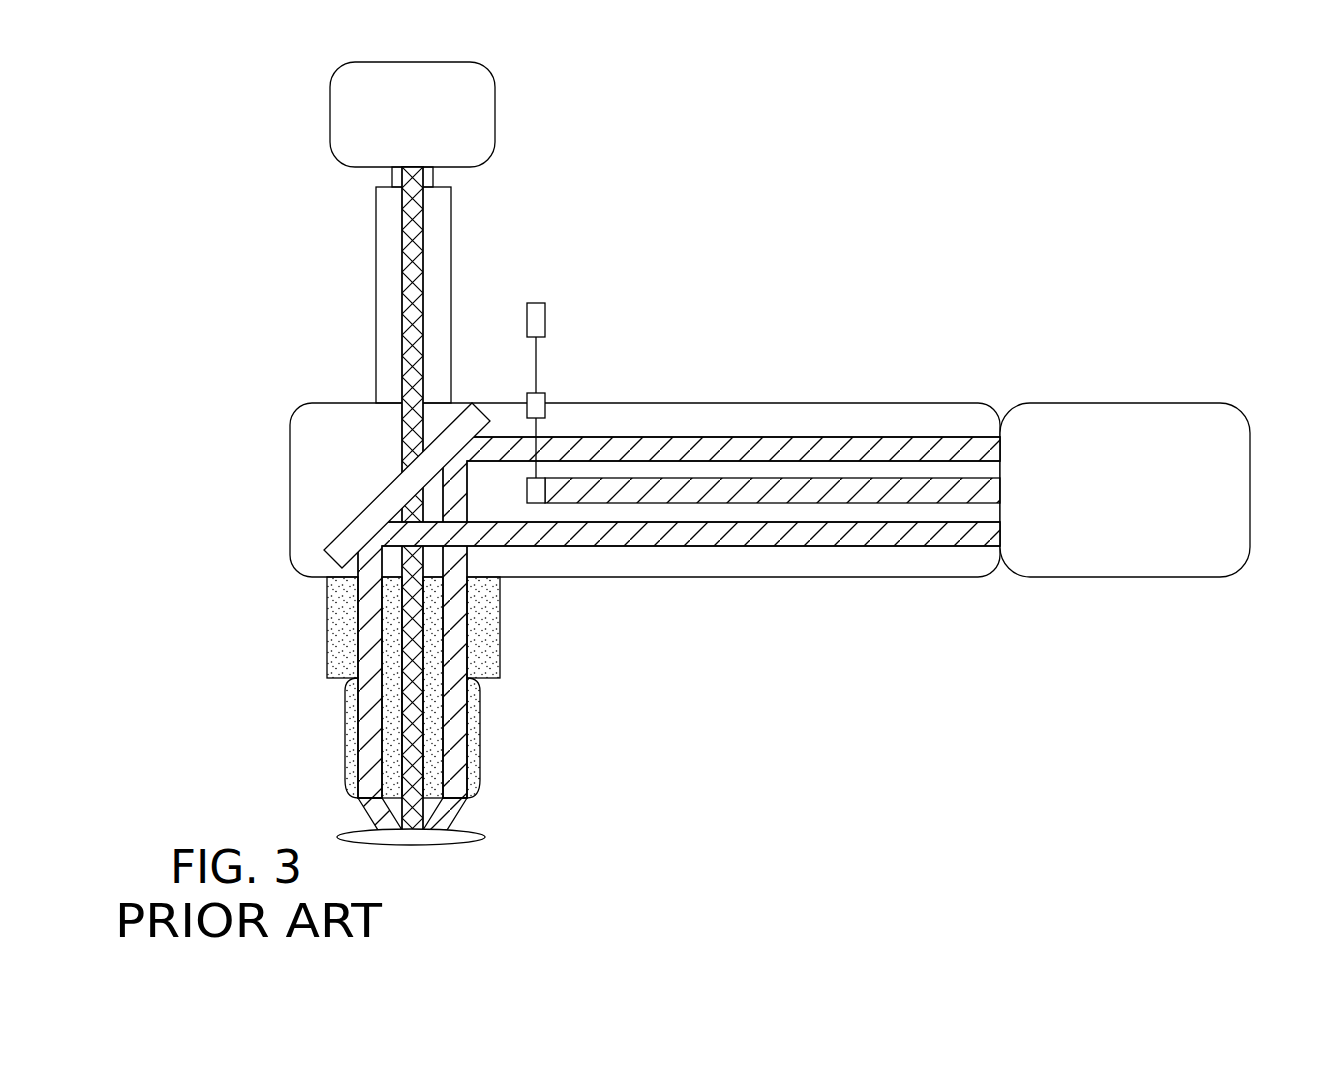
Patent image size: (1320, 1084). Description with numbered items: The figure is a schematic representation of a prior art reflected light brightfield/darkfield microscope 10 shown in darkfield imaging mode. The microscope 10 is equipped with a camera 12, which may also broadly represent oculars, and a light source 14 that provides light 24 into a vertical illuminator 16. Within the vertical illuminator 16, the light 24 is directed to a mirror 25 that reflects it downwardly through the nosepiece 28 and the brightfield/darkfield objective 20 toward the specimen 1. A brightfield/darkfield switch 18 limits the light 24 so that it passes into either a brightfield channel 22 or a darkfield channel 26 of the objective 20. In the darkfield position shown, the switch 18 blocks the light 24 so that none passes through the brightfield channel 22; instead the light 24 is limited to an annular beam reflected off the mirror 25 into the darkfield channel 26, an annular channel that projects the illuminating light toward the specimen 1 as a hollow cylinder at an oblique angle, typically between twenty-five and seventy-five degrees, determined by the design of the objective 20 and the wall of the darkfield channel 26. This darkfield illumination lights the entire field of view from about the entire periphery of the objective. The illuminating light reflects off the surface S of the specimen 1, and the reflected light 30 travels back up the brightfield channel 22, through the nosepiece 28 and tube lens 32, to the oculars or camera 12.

The microscope 10 is at (734, 496).
The camera 12 is at (493, 112).
The light source 14 is at (1195, 417).
The vertical illuminator 16 is at (757, 401).
The brightfield/darkfield switch 18 is at (497, 332).
The BD objective 20 is at (344, 727).
The brightfield channel 22 is at (300, 498).
The light 24 is at (601, 585).
The mirror 25 is at (347, 525).
The darkfield channel 26 is at (453, 752).
The nosepiece 28 is at (483, 665).
The reflected light 30 is at (410, 258).
The tube lens 32 is at (385, 303).
The surface S is at (462, 830).
The specimen 1 is at (430, 876).